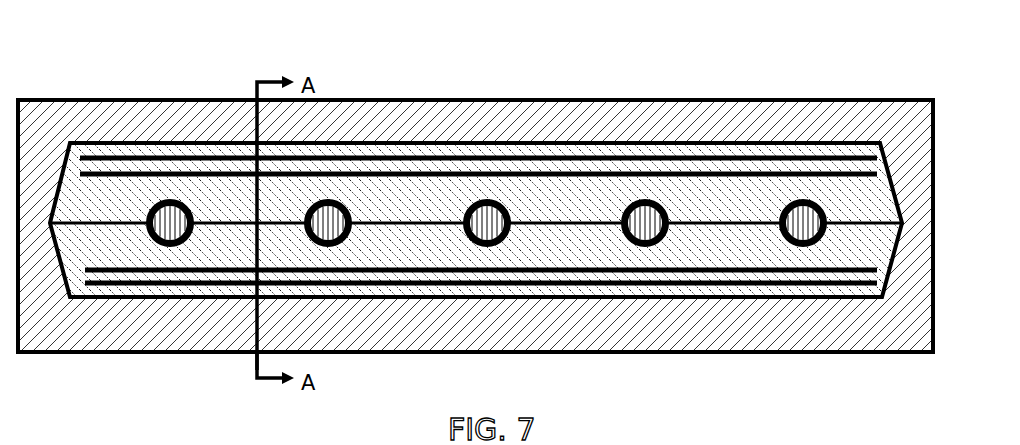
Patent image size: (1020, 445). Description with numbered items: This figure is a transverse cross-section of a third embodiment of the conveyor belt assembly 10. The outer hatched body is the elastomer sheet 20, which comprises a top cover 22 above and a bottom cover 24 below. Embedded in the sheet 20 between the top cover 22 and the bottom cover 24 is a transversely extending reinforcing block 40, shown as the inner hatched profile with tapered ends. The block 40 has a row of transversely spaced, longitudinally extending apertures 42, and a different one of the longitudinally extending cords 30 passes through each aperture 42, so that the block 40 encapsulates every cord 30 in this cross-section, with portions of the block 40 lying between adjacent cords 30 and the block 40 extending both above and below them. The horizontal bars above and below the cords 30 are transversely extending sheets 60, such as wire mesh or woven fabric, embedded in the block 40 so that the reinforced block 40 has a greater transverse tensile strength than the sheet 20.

The conveyor belt assembly 10 is at (68, 76).
The elastomer sheet 20 is at (128, 99).
The top cover 22 is at (860, 117).
The bottom cover 24 is at (862, 341).
The cord 30 is at (326, 198).
The reinforcing block 40 is at (179, 142).
The aperture 42 is at (503, 205).
The transversely extending sheet 60 is at (589, 156).